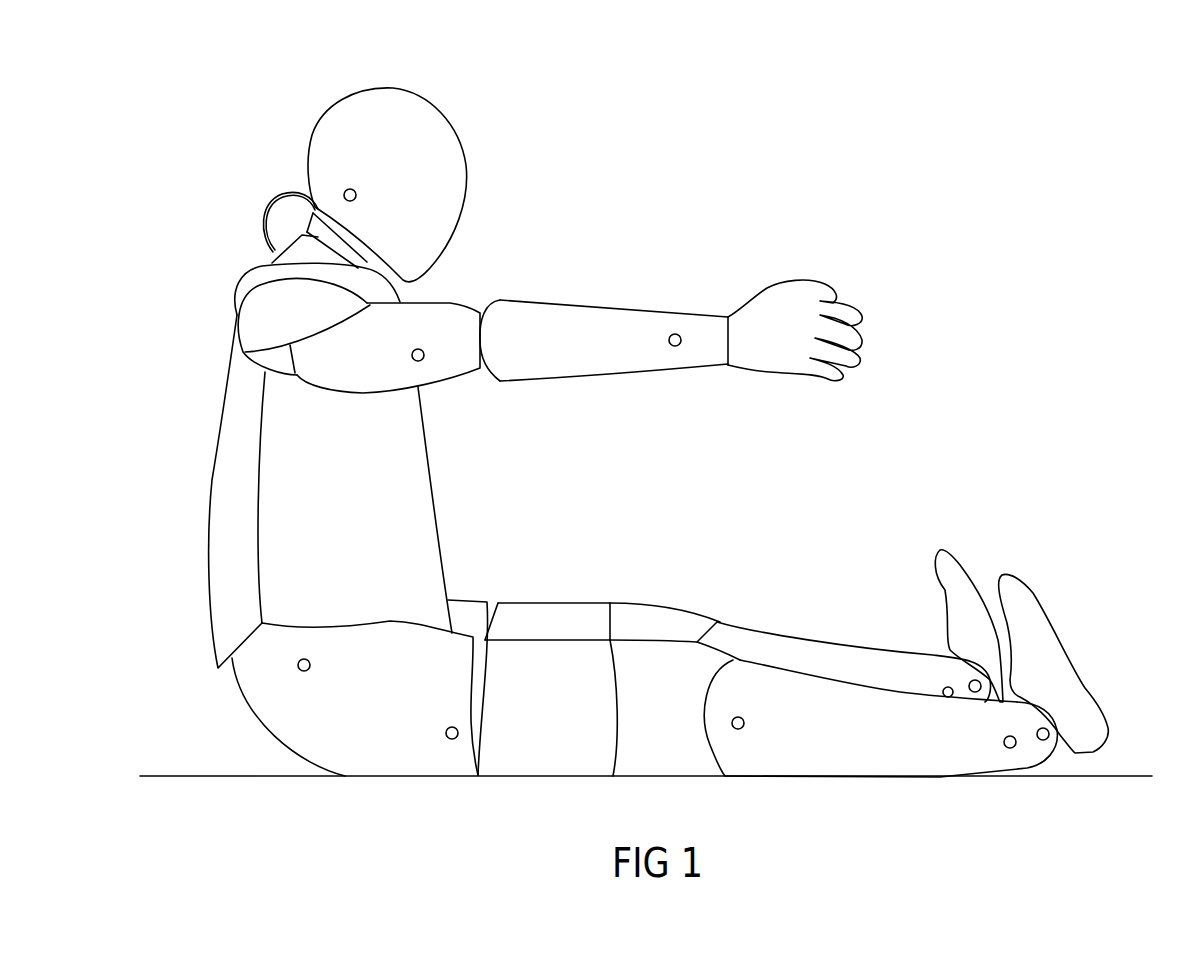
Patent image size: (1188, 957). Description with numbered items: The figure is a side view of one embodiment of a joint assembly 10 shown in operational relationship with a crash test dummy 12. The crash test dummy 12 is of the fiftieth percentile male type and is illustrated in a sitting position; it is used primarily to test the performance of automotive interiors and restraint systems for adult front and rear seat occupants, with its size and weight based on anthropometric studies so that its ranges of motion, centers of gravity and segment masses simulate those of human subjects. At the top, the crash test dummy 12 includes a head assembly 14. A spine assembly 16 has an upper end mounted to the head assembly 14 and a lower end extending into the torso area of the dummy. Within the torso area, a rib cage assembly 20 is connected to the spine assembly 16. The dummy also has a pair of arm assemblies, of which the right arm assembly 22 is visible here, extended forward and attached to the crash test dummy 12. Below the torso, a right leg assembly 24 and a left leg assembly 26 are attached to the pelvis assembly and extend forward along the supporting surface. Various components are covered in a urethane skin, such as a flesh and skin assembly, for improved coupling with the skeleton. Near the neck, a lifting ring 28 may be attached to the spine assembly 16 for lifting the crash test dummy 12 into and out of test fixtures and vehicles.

The joint assembly 10 is at (285, 768).
The crash test dummy 12 is at (373, 171).
The head assembly 14 is at (450, 117).
The spine assembly 16 is at (285, 209).
The rib cage assembly 20 is at (433, 443).
The right arm assembly 22 is at (448, 305).
The right leg assembly 24 is at (837, 700).
The left leg assembly 26 is at (800, 655).
The lifting ring 28 is at (280, 190).